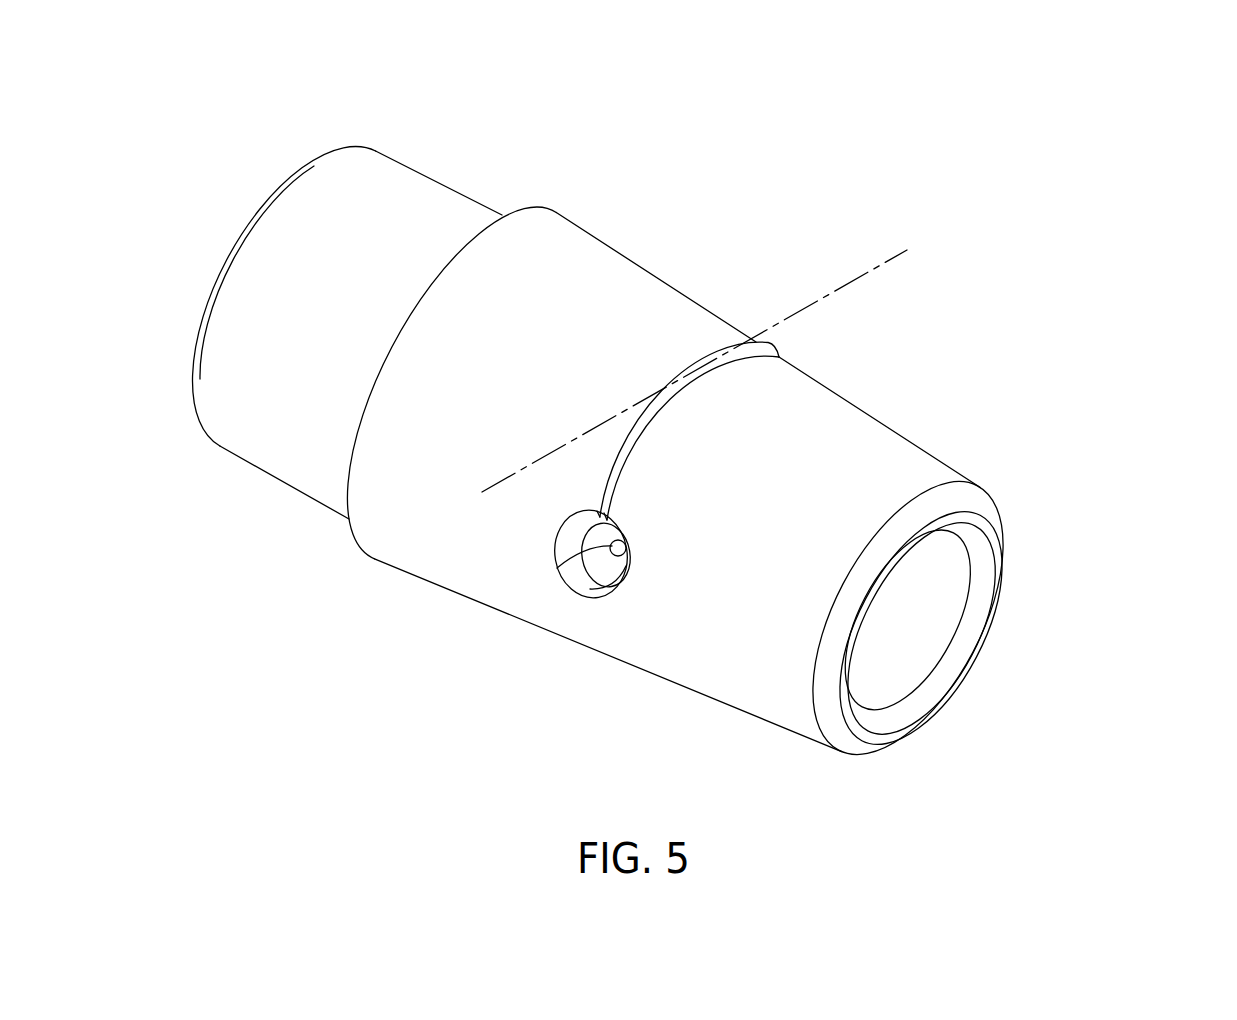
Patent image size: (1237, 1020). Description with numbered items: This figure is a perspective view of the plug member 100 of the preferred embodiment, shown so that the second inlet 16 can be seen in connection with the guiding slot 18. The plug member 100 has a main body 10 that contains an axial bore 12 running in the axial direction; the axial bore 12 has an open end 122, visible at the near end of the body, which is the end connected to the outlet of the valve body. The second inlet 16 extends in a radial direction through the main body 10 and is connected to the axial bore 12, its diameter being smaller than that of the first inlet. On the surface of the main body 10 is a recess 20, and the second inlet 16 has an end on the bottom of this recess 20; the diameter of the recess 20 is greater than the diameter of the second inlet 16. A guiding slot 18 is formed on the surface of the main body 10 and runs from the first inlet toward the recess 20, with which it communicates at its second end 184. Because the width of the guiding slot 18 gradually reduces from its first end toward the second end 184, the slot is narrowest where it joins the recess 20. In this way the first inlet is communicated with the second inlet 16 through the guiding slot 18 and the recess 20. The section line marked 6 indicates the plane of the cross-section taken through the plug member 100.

The plug member 100 is at (1056, 184).
The main body 10 is at (577, 277).
The axial bore 12 is at (928, 624).
The open end 122 is at (1000, 570).
The second inlet 16 is at (560, 563).
The guiding slot 18 is at (703, 342).
The second end 184 is at (600, 512).
The recess 20 is at (576, 598).
The section line 6-6' 6 is at (482, 492).